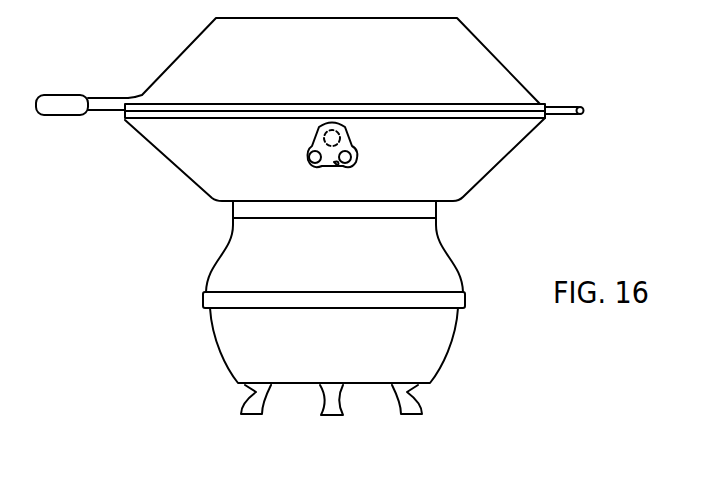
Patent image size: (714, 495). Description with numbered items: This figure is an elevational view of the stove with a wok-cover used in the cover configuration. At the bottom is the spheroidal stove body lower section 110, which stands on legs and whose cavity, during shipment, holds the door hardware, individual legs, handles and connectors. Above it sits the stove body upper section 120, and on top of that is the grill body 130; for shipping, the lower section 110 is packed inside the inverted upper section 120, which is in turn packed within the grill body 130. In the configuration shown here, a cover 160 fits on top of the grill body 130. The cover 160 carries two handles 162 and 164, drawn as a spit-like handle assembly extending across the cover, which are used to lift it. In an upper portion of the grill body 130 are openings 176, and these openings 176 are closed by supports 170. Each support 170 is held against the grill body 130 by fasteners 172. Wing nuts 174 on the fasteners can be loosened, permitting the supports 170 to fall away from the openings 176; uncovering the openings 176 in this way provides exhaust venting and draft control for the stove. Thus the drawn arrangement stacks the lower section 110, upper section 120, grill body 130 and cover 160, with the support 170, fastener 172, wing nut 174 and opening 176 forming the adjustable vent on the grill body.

The stove body lower section 110 is at (450, 350).
The stove body upper section 120 is at (455, 260).
The grill body 130 is at (498, 160).
The cover 160 is at (500, 63).
The handle 162 is at (103, 95).
The handle 164 is at (562, 103).
The support 170 is at (356, 137).
The fastener 172 is at (305, 165).
The wing nut 174 is at (340, 163).
The opening 176 is at (296, 138).